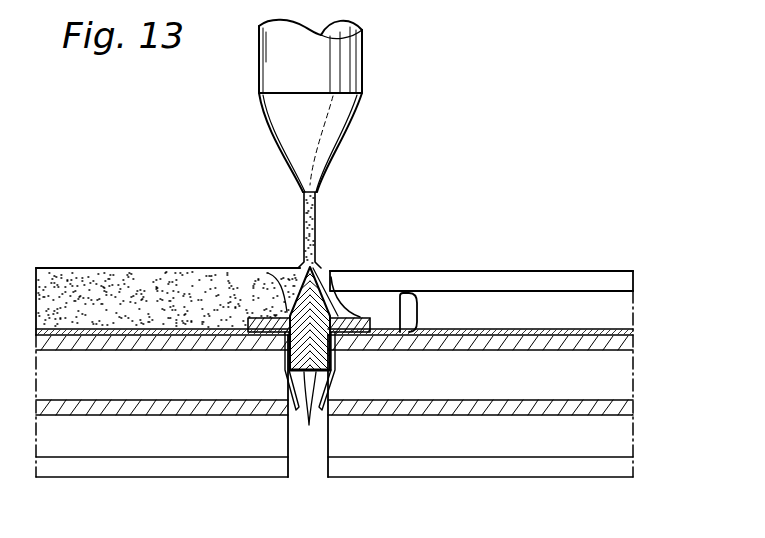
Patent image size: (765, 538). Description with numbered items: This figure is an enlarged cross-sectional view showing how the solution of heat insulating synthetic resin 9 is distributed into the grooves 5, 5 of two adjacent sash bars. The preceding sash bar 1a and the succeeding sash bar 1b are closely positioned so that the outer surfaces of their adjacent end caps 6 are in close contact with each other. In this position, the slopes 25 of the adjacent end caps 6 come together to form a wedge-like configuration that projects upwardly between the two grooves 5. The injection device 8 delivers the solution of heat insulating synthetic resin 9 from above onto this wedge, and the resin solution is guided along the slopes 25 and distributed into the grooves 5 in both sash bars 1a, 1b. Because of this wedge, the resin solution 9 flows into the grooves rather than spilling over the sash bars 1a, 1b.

The injection device 8 is at (356, 88).
The heat insulating synthetic resin 9 is at (97, 297).
The groove 5 is at (162, 288).
The slope 25 is at (265, 268).
The end cap 6 is at (322, 362).
The preceding sash bar 1a is at (207, 477).
The succeeding sash bar 1b is at (450, 470).